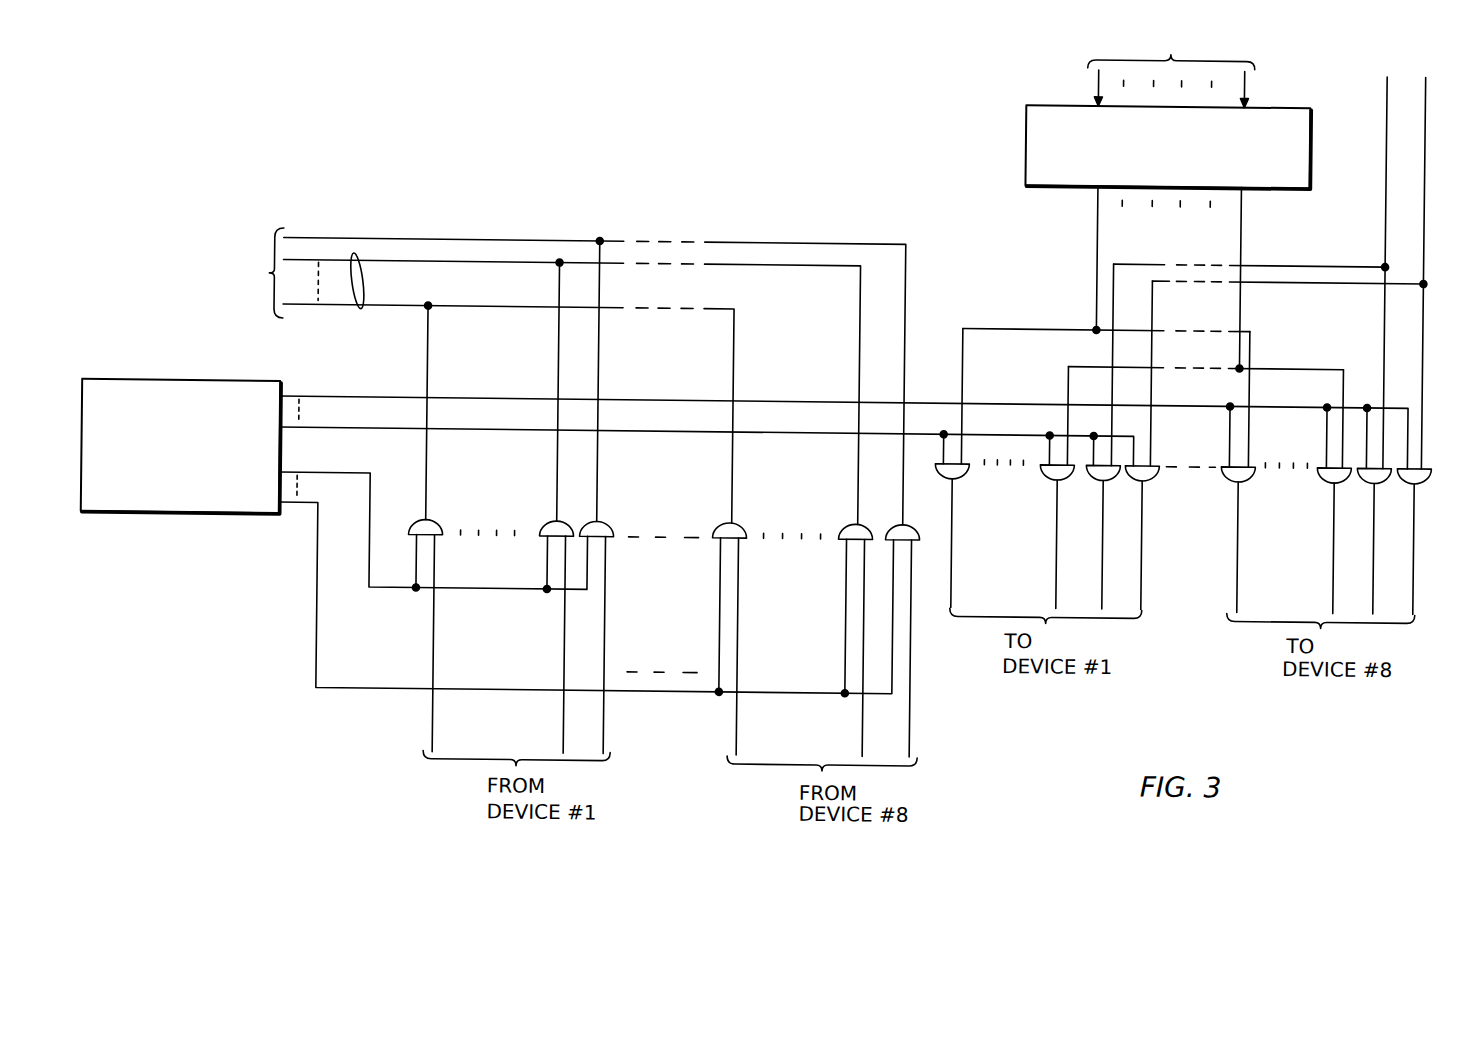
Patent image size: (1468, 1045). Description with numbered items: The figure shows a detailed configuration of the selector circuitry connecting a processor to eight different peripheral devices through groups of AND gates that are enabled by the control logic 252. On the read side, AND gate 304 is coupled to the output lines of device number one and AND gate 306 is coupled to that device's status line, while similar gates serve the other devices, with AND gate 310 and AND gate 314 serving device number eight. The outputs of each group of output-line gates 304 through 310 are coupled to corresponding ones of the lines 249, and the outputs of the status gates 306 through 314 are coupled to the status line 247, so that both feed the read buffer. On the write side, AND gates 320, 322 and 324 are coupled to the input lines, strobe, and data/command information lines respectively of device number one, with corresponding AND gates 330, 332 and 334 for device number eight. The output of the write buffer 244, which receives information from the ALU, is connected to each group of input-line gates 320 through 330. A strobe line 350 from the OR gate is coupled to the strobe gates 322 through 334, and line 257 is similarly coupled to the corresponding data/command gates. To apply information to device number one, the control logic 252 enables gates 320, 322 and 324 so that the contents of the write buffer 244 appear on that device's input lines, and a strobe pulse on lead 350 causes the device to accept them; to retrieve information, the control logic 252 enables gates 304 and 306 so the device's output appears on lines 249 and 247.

The write buffer 244 is at (1031, 97).
The status line 247 is at (408, 237).
The lines 249 is at (350, 310).
The control logic 252 is at (175, 381).
The line 257 is at (1421, 90).
The strobe line 350 is at (1383, 95).
The AND gate 304 is at (547, 520).
The AND gate 306 is at (607, 520).
The AND gate 310 is at (848, 524).
The AND gate 314 is at (918, 528).
The AND gate 320 is at (1045, 472).
The AND gate 322 is at (1094, 472).
The AND gate 324 is at (1149, 472).
The AND gate 330 is at (1324, 472).
The AND gate 332 is at (1363, 452).
The AND gate 334 is at (1424, 472).